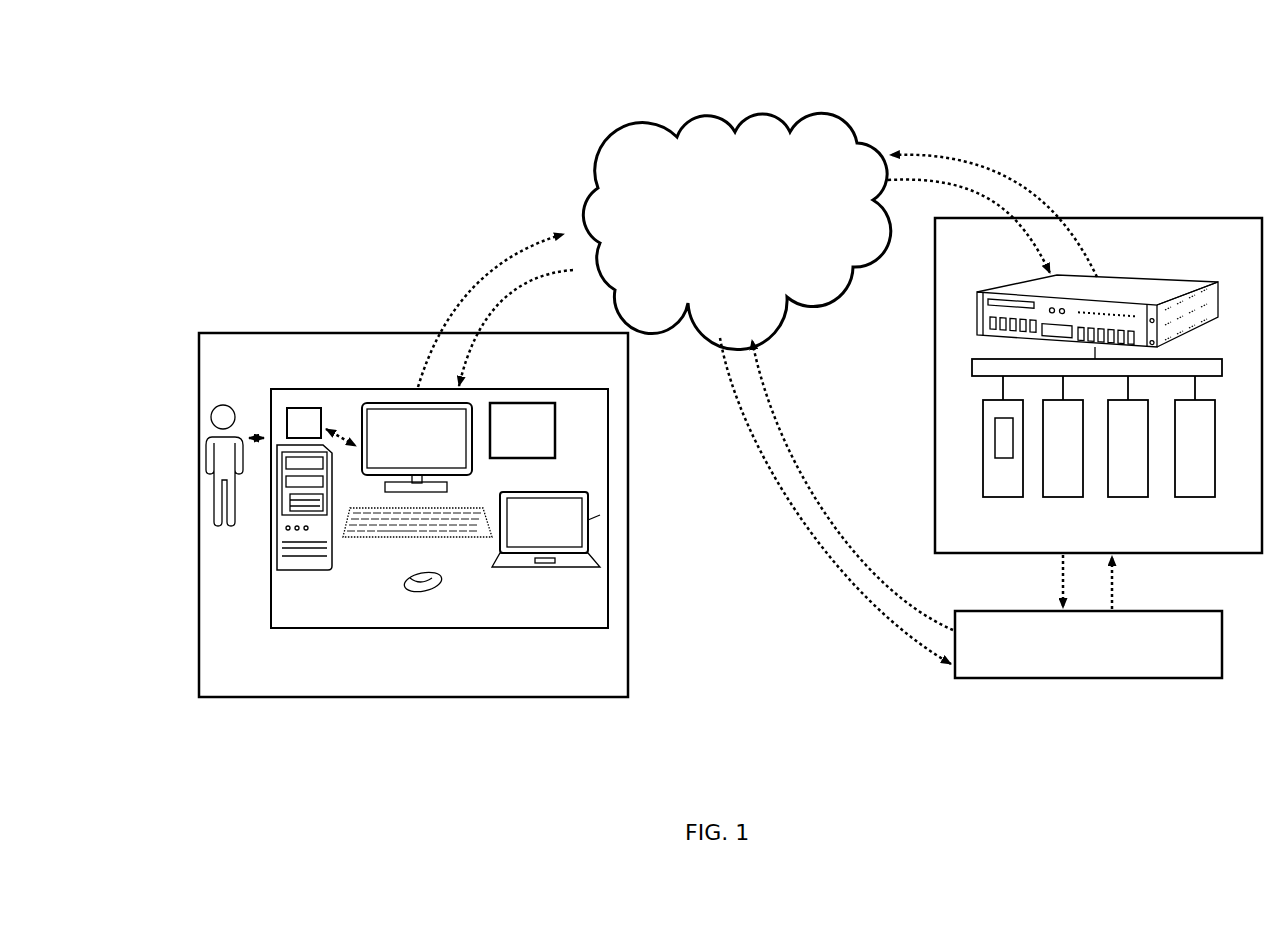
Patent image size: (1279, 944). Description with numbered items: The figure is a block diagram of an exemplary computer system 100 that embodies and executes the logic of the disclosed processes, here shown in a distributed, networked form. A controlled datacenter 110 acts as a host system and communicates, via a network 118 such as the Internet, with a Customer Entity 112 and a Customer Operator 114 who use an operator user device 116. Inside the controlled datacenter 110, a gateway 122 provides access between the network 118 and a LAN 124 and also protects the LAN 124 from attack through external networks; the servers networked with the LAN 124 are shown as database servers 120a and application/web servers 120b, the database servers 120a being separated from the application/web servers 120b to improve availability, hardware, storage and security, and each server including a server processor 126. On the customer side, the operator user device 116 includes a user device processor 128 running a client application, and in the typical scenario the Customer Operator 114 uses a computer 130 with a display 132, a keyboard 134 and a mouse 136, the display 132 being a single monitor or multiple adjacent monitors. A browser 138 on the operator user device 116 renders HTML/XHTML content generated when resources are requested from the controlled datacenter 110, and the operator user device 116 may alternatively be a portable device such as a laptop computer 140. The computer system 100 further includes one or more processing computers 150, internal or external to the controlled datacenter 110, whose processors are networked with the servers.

The computer system 100 is at (986, 69).
The controlled datacenter 110 is at (1242, 218).
The Customer Entity 112 is at (337, 333).
The Customer Operator 114 is at (210, 528).
The operator user device 116 is at (537, 628).
The network 118 is at (609, 148).
The database server 120a is at (1073, 497).
The application/web server 120b is at (1117, 497).
The gateway 122 is at (1153, 277).
The LAN 124 is at (1188, 358).
The server processor 126 is at (995, 443).
The user device processor 128 is at (555, 422).
The computer 130 is at (302, 572).
The display 132 is at (377, 403).
The keyboard 134 is at (372, 537).
The mouse 136 is at (412, 592).
The browser 138 is at (298, 408).
The laptop computer 140 is at (552, 568).
The processing computer 150 is at (983, 680).